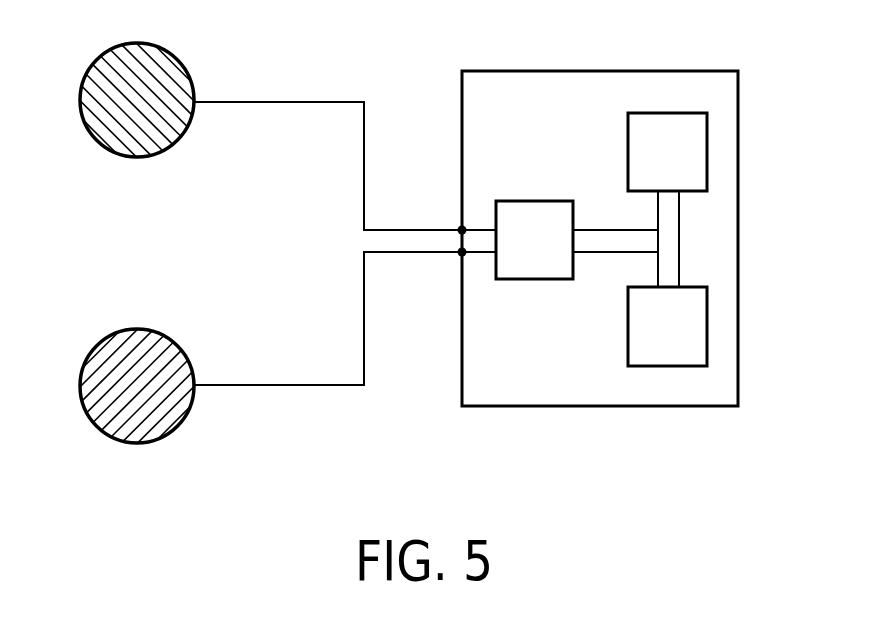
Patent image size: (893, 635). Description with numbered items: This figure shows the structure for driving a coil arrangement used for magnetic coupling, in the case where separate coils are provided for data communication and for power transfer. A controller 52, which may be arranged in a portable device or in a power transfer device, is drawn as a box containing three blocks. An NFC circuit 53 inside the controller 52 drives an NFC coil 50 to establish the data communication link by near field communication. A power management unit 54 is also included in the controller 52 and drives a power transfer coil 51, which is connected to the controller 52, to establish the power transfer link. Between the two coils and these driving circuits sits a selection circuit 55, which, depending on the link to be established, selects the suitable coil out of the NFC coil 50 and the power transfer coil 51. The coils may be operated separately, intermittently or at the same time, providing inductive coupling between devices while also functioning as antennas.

The NFC coil 50 is at (98, 123).
The power transfer coil 51 is at (175, 355).
The controller 52 is at (539, 70).
The NFC circuit 53 is at (663, 111).
The power management unit 54 is at (707, 337).
The selection circuit 55 is at (539, 200).